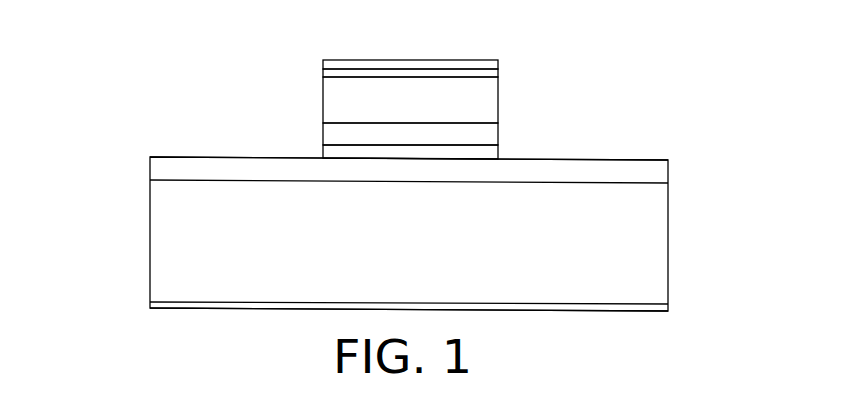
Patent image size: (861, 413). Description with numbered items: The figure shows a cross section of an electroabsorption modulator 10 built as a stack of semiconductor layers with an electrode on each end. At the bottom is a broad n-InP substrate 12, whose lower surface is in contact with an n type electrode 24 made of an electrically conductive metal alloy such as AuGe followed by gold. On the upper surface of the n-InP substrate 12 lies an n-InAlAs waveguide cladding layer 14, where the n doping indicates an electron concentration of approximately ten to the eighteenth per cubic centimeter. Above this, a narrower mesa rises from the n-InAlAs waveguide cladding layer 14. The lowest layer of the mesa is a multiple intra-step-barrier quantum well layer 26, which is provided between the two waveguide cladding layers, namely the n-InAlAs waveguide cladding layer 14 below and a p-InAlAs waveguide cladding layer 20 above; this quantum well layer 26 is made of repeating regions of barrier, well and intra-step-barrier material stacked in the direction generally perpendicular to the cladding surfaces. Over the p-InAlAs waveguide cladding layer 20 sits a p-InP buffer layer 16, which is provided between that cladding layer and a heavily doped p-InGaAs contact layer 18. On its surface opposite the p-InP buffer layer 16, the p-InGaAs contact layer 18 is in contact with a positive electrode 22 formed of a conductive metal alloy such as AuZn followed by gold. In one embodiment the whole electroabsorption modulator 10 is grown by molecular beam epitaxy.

The electroabsorption modulator 10 is at (633, 75).
The n-InP substrate 12 is at (668, 238).
The n-InAlAs waveguide cladding layer 14 is at (668, 170).
The p-InP buffer layer 16 is at (500, 107).
The p-InGaAs contact layer 18 is at (500, 73).
The p-InAlAs waveguide cladding layer 20 is at (500, 135).
The positive electrode 22 is at (475, 60).
The n type electrode 24 is at (650, 314).
The multiple intra-step-barrier quantum well layer 26 is at (500, 157).